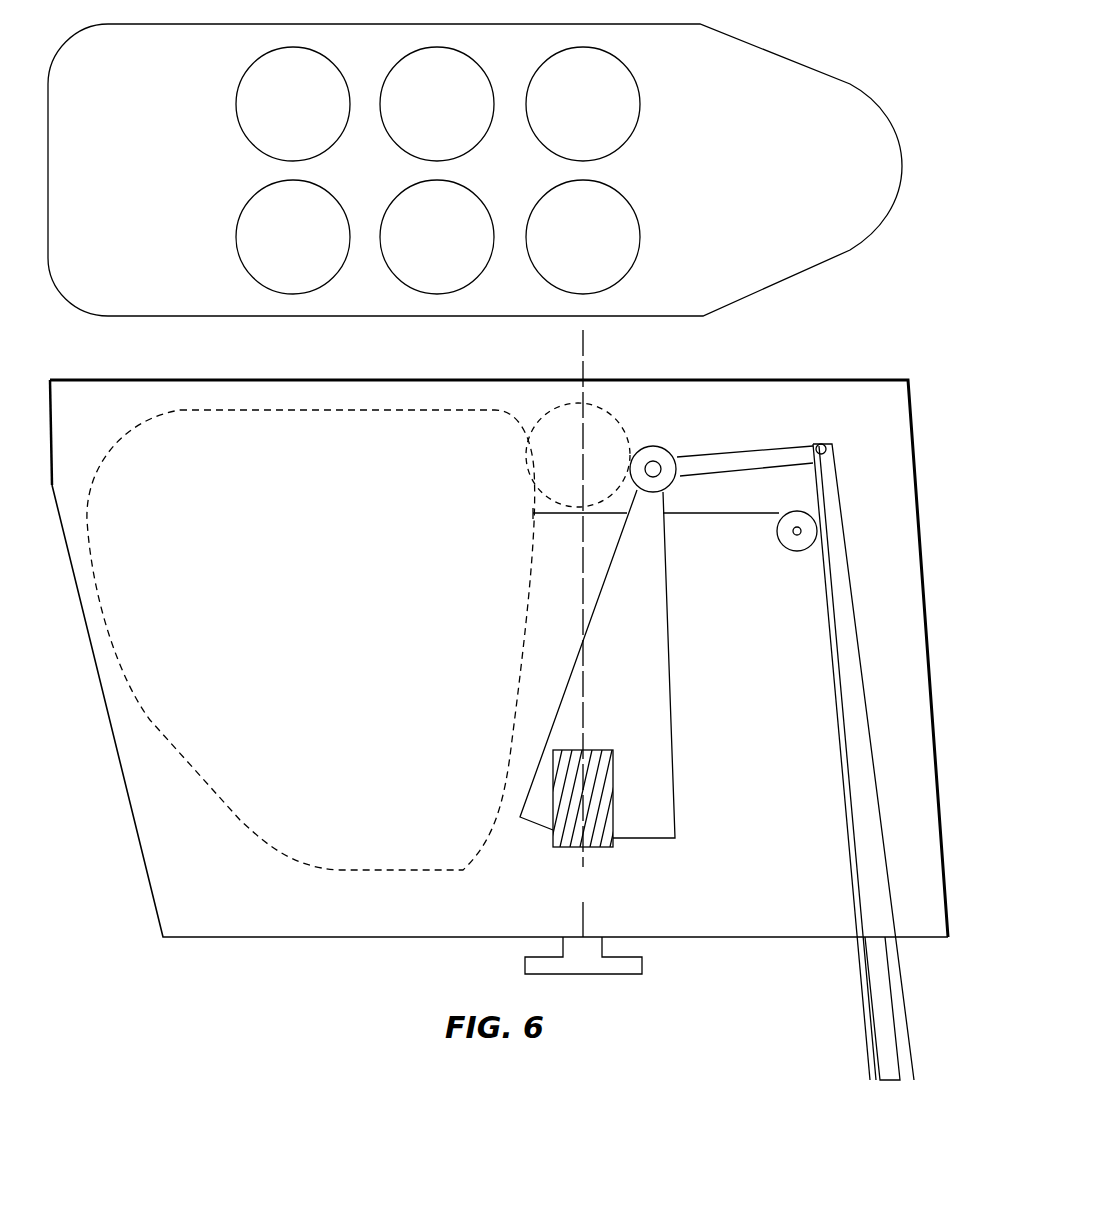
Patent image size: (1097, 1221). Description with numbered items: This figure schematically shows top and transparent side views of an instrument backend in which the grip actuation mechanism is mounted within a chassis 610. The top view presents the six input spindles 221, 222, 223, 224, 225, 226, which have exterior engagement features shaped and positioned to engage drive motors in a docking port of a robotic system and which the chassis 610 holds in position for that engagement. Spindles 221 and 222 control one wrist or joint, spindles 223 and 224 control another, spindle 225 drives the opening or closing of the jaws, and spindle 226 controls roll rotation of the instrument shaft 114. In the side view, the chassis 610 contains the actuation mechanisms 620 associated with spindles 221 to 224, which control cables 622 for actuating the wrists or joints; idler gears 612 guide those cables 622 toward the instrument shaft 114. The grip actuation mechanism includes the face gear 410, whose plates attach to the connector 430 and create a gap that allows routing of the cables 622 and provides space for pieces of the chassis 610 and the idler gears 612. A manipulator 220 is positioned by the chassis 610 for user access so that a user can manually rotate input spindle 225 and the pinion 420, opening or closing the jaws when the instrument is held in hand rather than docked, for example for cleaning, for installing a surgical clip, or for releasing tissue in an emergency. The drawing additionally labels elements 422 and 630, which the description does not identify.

The input spindle 221 is at (313, 248).
The input spindle 222 is at (313, 115).
The input spindle 223 is at (457, 248).
The input spindle 224 is at (457, 115).
The input spindle 225 is at (603, 248).
The input spindle 226 is at (603, 115).
The manipulator 220 is at (600, 975).
The axis of rotation 422 is at (583, 365).
The connector 430 is at (826, 447).
The cables 622 is at (710, 513).
The idler gears 612 is at (795, 551).
The drive rod 630 is at (852, 697).
The face gear 410 is at (638, 701).
The pinion 420 is at (553, 832).
The chassis 610 is at (322, 919).
The actuation mechanisms 620 is at (315, 646).
The instrument shaft 114 is at (863, 1033).